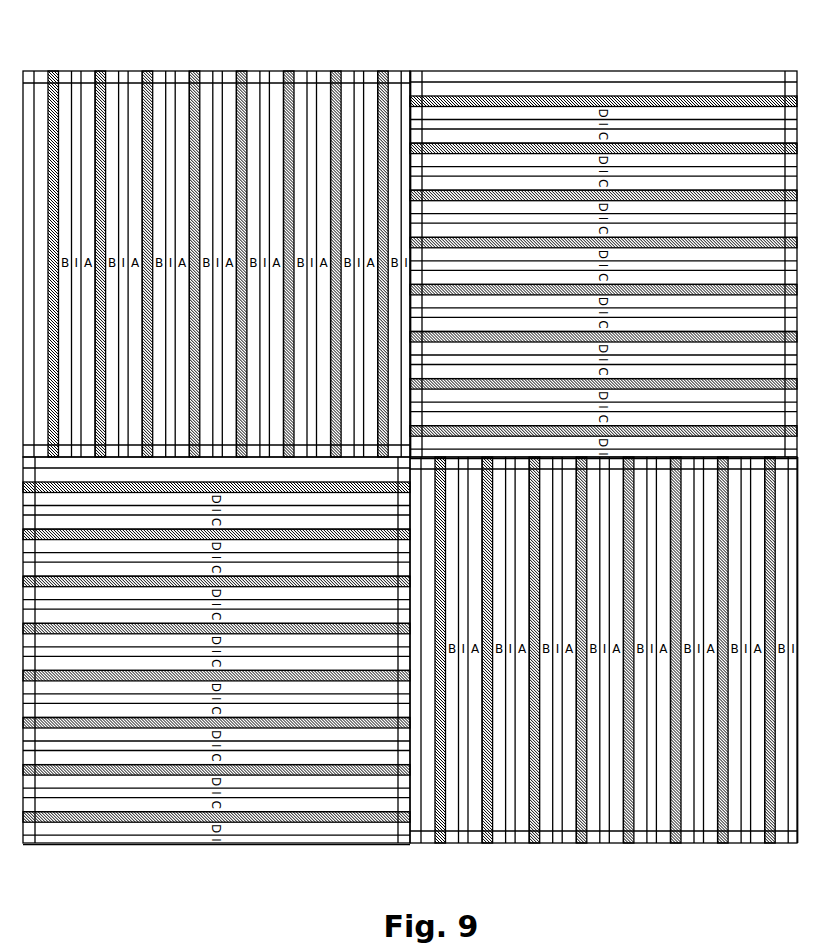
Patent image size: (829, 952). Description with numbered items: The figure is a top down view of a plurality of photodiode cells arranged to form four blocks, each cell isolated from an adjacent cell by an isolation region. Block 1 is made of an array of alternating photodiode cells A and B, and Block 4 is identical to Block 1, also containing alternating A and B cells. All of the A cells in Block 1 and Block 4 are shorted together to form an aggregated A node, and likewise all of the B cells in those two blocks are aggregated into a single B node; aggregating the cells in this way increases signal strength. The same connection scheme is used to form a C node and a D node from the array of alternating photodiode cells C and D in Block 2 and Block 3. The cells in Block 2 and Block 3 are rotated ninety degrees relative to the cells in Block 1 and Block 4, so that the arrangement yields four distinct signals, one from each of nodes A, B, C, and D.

The block Block 1 is at (222, 72).
The block Block 2 is at (587, 72).
The block Block 3 is at (248, 843).
The block Block 4 is at (608, 843).